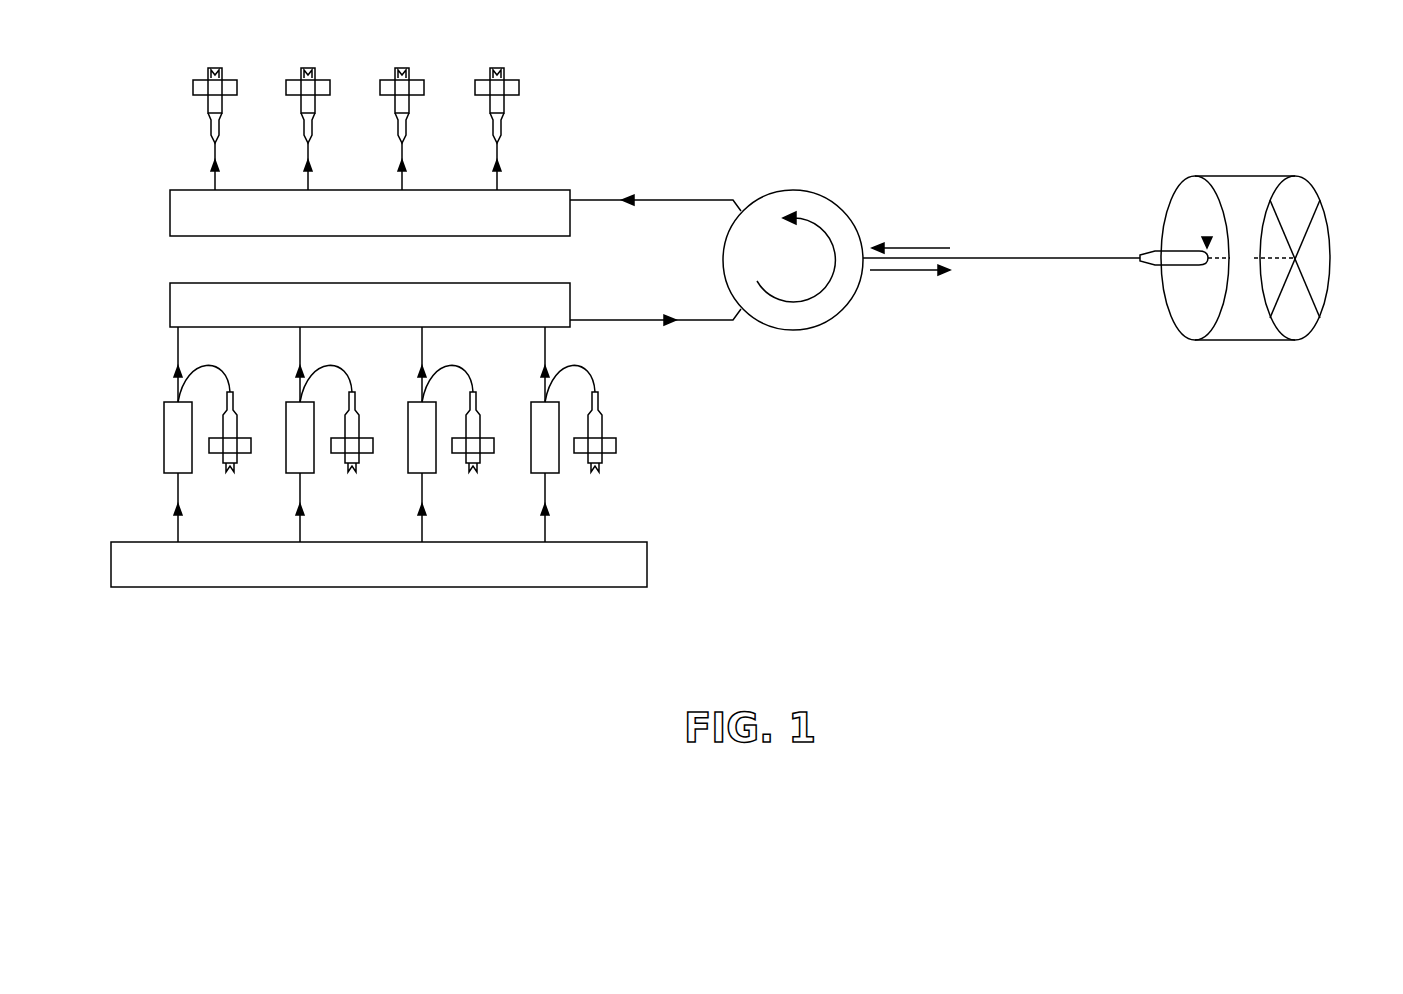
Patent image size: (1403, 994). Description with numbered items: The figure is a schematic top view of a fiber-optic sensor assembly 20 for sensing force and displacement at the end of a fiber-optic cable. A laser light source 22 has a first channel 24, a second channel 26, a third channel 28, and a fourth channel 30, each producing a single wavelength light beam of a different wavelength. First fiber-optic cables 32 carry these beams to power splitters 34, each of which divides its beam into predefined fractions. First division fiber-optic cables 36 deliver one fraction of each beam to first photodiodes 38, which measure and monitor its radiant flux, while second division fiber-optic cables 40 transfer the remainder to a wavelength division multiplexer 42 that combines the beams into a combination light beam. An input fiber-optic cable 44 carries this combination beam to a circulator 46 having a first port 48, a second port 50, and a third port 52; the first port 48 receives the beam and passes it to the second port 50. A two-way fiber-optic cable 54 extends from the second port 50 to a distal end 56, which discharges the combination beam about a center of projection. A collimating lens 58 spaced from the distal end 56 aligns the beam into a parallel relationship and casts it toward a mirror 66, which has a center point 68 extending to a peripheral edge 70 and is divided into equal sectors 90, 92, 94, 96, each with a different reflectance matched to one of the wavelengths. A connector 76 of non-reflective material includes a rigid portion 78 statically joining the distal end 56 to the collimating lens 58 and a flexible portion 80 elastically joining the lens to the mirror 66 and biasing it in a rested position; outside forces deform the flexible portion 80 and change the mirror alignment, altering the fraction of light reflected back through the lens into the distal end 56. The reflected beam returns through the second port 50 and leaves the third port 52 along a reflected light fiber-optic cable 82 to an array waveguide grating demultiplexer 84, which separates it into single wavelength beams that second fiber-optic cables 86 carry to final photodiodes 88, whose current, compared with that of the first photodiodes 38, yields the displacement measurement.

The fiber-optic sensor assembly 20 is at (1093, 52).
The laser light source 22 is at (132, 572).
The first channel 24 is at (183, 540).
The second channel 26 is at (303, 540).
The third channel 28 is at (425, 540).
The fourth channel 30 is at (547, 540).
The first fiber-optic cables 32 is at (300, 494).
The power splitters 34 is at (168, 440).
The first division fiber-optic cables 36 is at (455, 365).
The first photodiodes 38 is at (482, 427).
The second division fiber-optic cables 40 is at (178, 352).
The wavelength division multiplexer 42 is at (202, 297).
The input fiber-optic cable 44 is at (697, 322).
The circulator 46 is at (814, 331).
The first port 48 is at (738, 313).
The second port 50 is at (862, 252).
The third port 52 is at (740, 212).
The two-way fiber-optic cable 54 is at (1052, 262).
The distal end 56 is at (1145, 262).
The collimating lens 58 is at (1207, 240).
The mirror 66 is at (1295, 176).
The center point 68 is at (1318, 248).
The peripheral edge 70 is at (1318, 328).
The connector 76 is at (1228, 340).
The rigid portion 78 is at (1183, 262).
The flexible portion 80 is at (1278, 340).
The reflected light fiber-optic cable 82 is at (600, 200).
The array waveguide grating demultiplexer 84 is at (185, 213).
The second fiber-optic cables 86 is at (303, 175).
The final photodiodes 88 is at (200, 102).
The sector 90 is at (1297, 200).
The sector 92 is at (1270, 245).
The sector 94 is at (1318, 270).
The sector 96 is at (1297, 325).